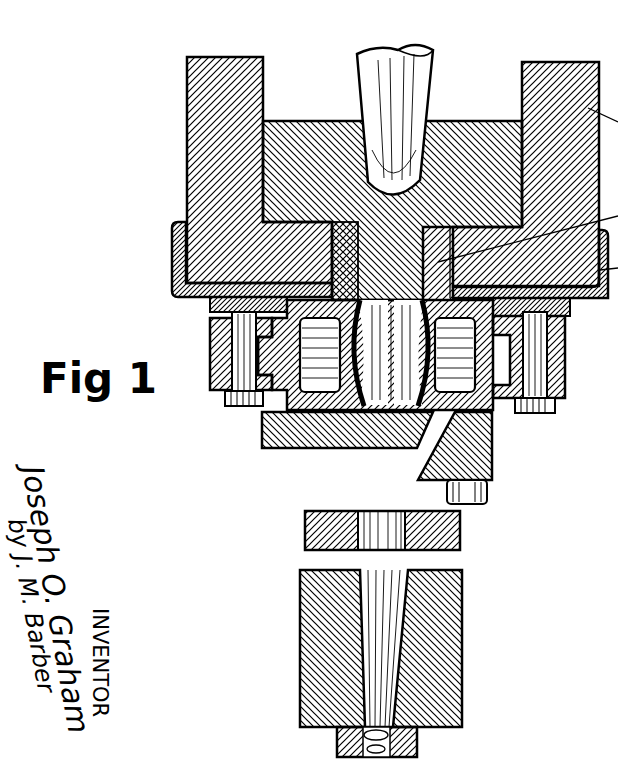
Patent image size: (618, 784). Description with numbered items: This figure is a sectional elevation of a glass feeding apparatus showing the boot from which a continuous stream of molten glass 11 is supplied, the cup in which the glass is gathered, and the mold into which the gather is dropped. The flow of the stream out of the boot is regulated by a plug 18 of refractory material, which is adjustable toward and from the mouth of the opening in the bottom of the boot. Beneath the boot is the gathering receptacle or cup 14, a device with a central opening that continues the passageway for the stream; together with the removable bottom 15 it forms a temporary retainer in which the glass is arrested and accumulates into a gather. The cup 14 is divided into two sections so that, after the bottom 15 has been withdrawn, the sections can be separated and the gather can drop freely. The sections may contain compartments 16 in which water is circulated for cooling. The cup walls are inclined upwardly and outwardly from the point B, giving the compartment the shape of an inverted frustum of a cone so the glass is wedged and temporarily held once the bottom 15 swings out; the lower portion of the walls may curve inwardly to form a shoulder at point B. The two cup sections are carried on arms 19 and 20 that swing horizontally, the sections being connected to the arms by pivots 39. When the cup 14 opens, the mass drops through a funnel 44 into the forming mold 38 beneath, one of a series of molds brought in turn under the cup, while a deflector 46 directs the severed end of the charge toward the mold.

The molten glass 11 is at (453, 137).
The plug 18 is at (432, 68).
The arm 20 is at (210, 339).
The pivots 39 is at (536, 360).
The arm 19 is at (560, 392).
The gathering receptacle or cup 14 is at (495, 408).
The compartments 16 is at (284, 404).
The point B is at (340, 402).
The removable bottom 15 is at (347, 453).
The deflector 46 is at (428, 479).
The funnel 44 is at (462, 527).
The molds 38 is at (446, 643).